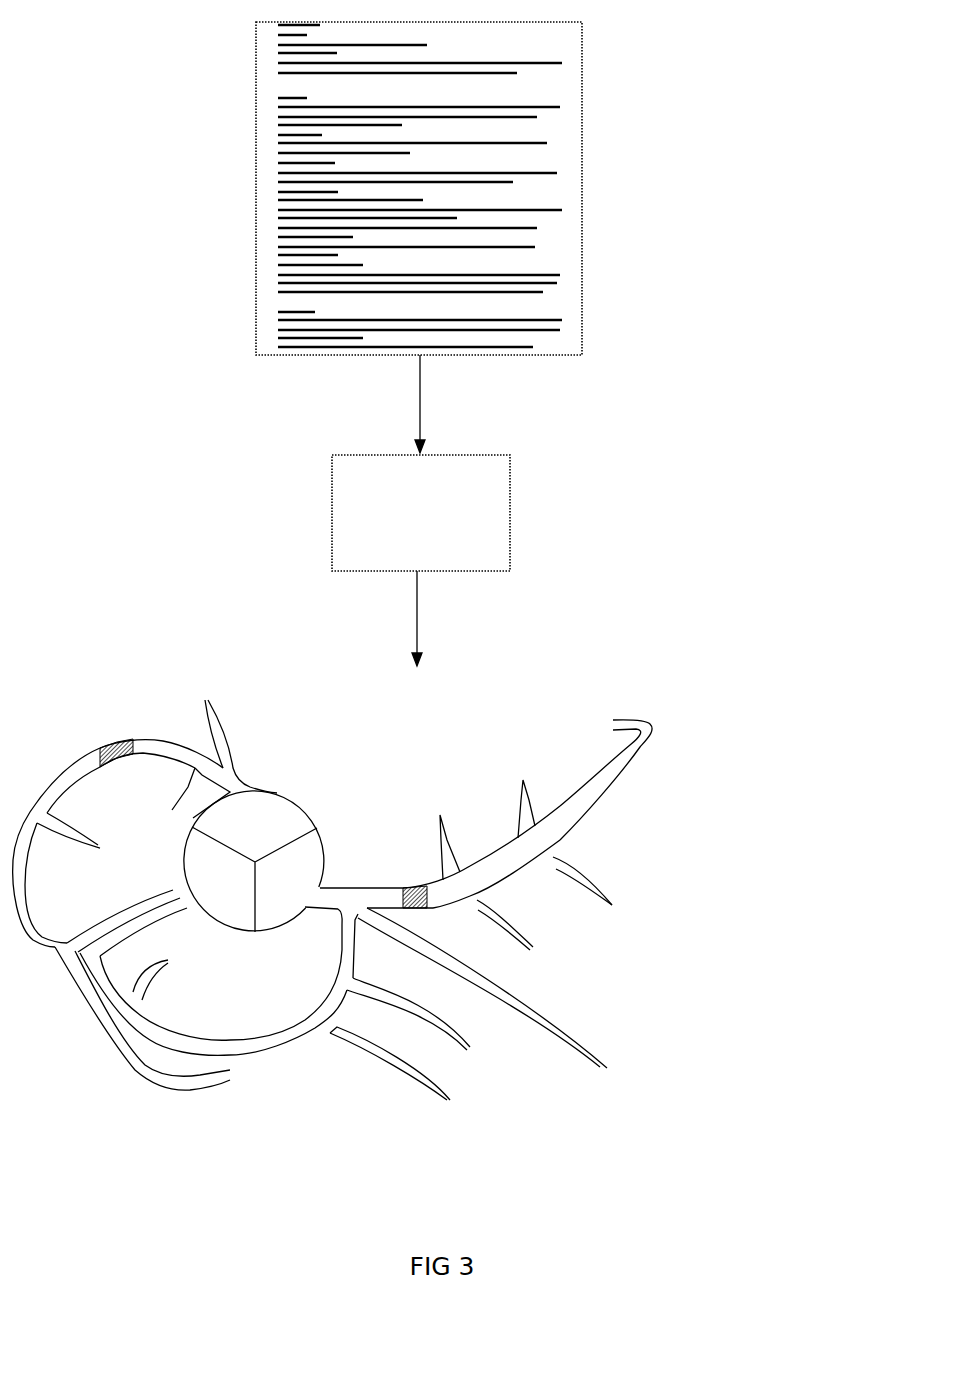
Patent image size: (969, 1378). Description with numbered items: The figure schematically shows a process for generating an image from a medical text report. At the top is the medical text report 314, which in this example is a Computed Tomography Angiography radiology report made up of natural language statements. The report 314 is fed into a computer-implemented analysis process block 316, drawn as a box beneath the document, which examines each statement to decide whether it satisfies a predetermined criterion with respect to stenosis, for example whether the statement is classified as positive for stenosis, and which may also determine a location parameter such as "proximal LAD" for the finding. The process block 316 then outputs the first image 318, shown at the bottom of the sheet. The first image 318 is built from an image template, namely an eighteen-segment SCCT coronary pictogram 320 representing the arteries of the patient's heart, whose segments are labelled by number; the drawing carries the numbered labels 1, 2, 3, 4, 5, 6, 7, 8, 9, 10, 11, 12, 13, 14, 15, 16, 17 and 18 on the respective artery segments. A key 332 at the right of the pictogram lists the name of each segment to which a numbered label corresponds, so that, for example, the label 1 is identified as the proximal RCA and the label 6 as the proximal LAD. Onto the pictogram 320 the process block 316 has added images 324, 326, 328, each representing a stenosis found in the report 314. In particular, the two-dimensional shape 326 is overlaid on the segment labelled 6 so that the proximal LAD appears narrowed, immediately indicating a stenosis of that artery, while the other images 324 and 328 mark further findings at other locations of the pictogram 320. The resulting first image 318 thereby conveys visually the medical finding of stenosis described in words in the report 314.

The medical text report 314 is at (582, 64).
The analysis process block 316 is at (421, 513).
The first image 318 is at (755, 700).
The coronary pictogram template 320 is at (590, 813).
The image representing stenosis 324 is at (113, 742).
The two-dimensional shape representing stenosis 326 is at (437, 909).
The image representing stenosis 328 is at (408, 892).
The key 332 is at (813, 895).
The proximal RCA segment label 1 is at (188, 759).
The Mid RCA 2 is at (56, 804).
The Distal RCA 3 is at (40, 885).
The PDA-R 4 is at (127, 923).
The Left main 5 is at (354, 898).
The proximal LAD segment label 6 is at (436, 887).
The Mid LAD 7 is at (500, 838).
The Distal LAD 8 is at (606, 780).
The D1 9 is at (505, 925).
The D2 10 is at (582, 881).
The Proximal LCx 11 is at (348, 943).
The OM1 12 is at (408, 1014).
The Mid and distal LCx 13 is at (155, 993).
The OM2 14 is at (390, 1063).
The PDA-L 15 is at (288, 1002).
The PLB-R 16 is at (142, 1018).
The Ramus intermedius 17 is at (482, 988).
The PLB-L 18 is at (158, 983).